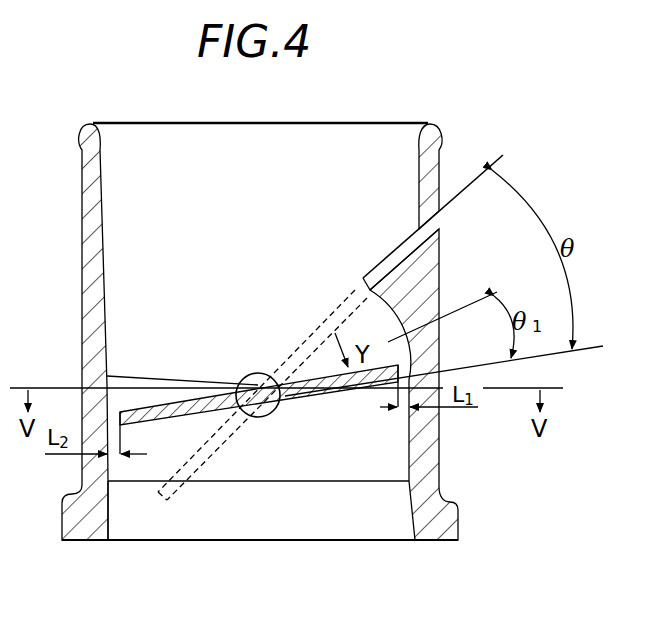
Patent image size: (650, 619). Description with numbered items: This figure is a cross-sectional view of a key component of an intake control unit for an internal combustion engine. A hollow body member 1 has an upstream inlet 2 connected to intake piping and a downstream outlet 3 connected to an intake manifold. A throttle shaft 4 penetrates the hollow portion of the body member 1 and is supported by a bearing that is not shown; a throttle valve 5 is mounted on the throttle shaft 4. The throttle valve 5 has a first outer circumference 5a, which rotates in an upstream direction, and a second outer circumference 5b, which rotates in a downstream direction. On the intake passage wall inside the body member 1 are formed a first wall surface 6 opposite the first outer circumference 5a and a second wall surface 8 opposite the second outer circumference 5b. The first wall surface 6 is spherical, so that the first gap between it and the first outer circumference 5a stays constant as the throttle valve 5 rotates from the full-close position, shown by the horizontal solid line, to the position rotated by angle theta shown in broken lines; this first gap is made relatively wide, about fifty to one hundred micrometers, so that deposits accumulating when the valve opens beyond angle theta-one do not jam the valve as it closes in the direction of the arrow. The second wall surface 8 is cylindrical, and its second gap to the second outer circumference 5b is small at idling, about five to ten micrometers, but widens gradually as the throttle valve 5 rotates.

The hollow body member 1 is at (92, 241).
The upstream inlet 2 is at (322, 123).
The downstream outlet 3 is at (318, 541).
The throttle shaft 4 is at (258, 373).
The throttle valve 5 is at (203, 388).
The first outer circumference 5a is at (364, 394).
The second outer circumference 5b is at (104, 404).
The first wall surface 6 is at (386, 300).
The second wall surface 8 is at (112, 466).